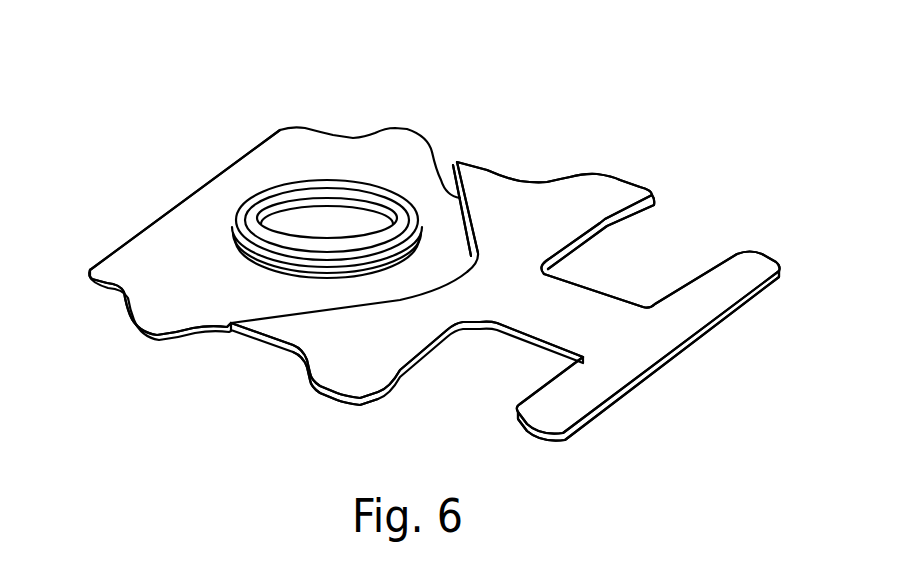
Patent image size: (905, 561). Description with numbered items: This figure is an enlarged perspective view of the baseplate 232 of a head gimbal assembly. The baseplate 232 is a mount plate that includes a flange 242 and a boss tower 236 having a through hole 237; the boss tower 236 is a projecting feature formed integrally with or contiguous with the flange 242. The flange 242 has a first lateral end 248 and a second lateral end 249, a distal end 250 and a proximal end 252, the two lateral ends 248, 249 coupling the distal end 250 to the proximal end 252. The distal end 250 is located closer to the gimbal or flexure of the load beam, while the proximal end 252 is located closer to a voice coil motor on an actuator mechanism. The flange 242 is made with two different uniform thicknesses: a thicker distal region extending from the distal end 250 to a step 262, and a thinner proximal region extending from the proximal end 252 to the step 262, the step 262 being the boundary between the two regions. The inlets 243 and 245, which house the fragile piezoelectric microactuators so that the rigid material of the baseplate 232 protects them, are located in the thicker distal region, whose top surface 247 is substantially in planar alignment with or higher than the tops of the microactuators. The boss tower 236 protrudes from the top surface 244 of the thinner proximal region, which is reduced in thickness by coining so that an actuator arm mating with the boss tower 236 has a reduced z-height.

The baseplate 232 is at (645, 134).
The boss tower 236 is at (348, 187).
The through hole 237 is at (316, 207).
The flange 242 is at (287, 366).
The inlet 243 is at (504, 356).
The top surface 244 is at (153, 250).
The inlet 245 is at (648, 255).
The top surface 247 is at (606, 198).
The first lateral end 248 is at (575, 175).
The second lateral end 249 is at (337, 407).
The distal end 250 is at (707, 324).
The proximal end 252 is at (180, 203).
The step 262 is at (441, 178).